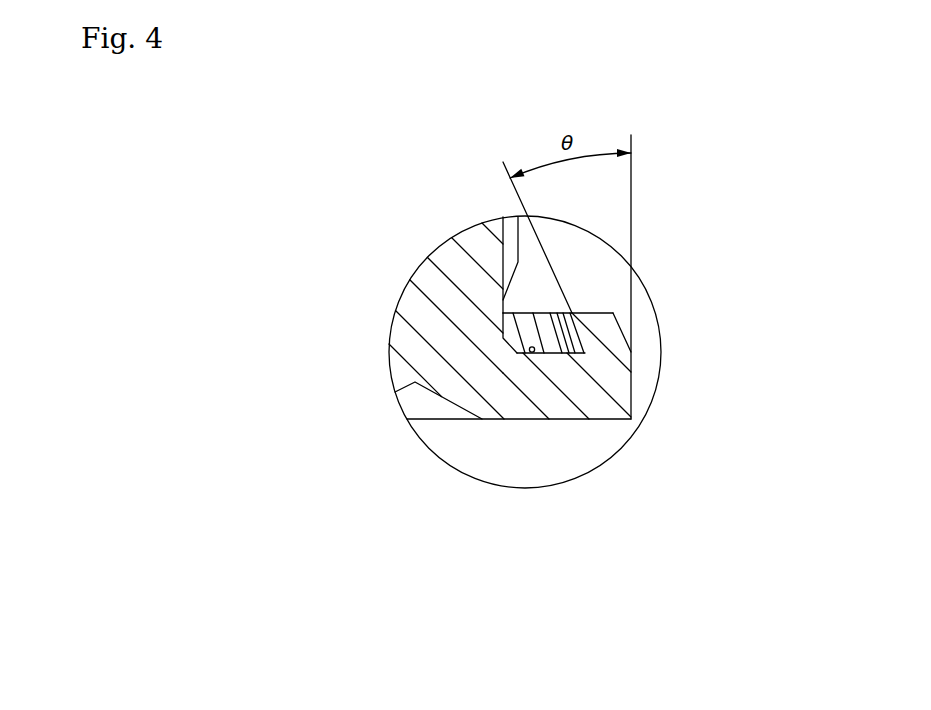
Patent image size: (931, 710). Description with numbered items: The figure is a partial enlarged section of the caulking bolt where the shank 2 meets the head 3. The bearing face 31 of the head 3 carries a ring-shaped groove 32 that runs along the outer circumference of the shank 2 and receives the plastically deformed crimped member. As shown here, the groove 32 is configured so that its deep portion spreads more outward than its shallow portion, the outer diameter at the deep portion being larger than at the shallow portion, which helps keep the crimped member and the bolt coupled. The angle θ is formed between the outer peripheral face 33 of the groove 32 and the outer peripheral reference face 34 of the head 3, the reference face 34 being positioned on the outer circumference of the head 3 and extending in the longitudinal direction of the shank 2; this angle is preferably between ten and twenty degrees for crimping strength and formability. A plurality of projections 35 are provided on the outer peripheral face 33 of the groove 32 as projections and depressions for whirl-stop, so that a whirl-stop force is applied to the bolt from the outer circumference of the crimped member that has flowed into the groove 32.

The shank 2 is at (457, 253).
The head 3 is at (402, 368).
The bearing face 31 is at (587, 313).
The groove 32 is at (530, 353).
The outer peripheral face 33 is at (575, 353).
The outer peripheral reference face 34 is at (632, 387).
The projections 35 is at (532, 316).